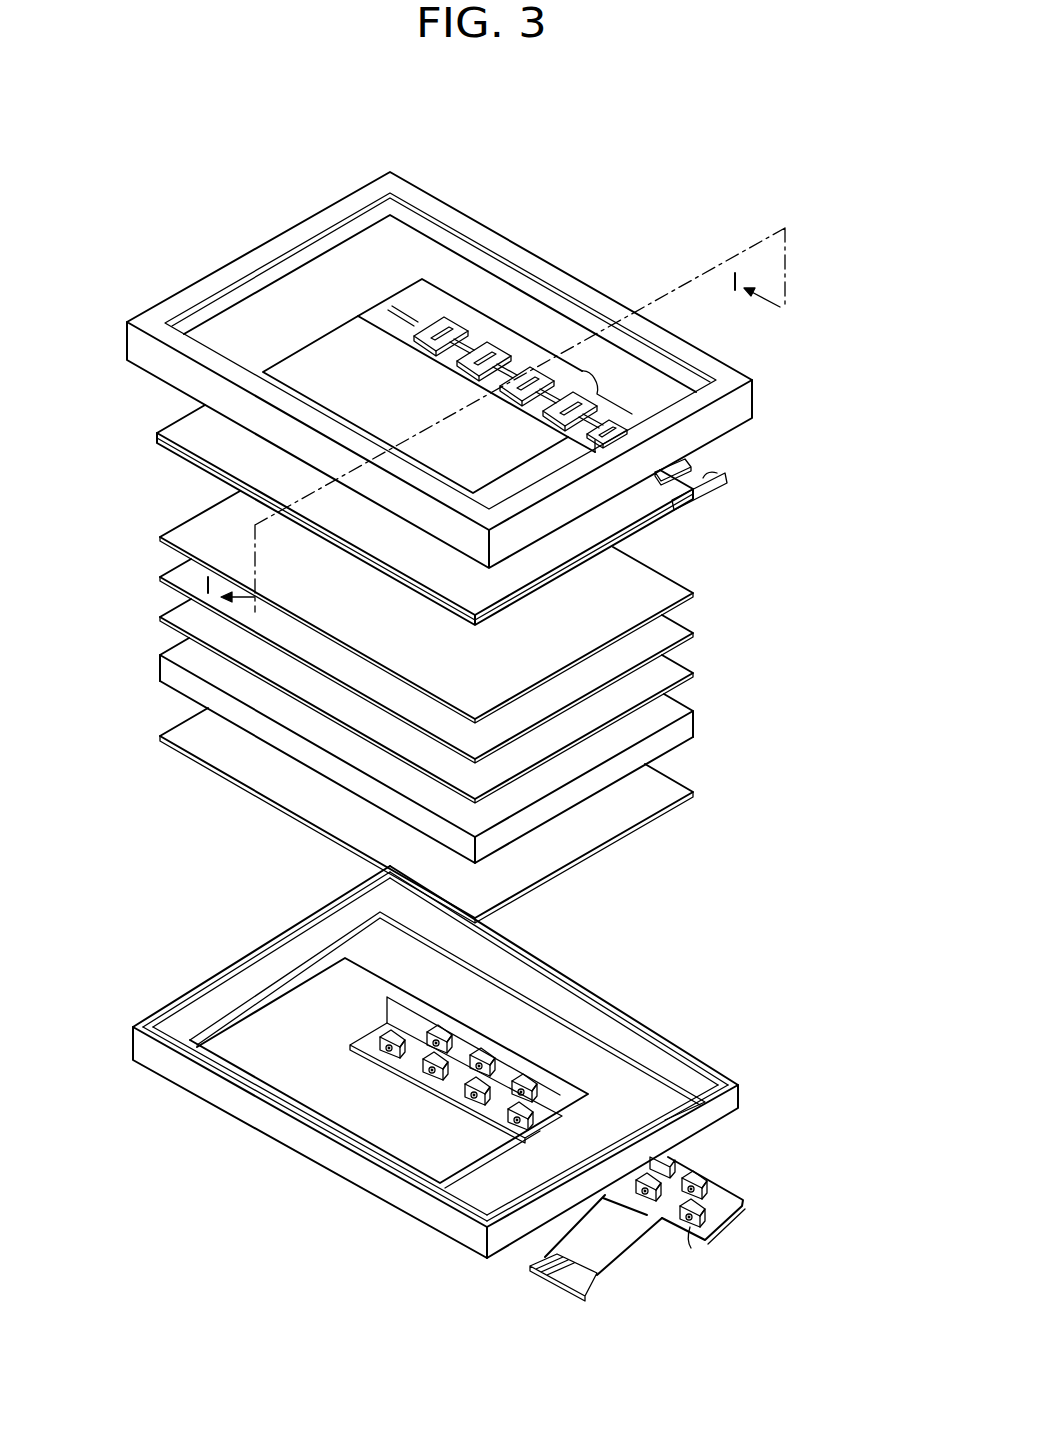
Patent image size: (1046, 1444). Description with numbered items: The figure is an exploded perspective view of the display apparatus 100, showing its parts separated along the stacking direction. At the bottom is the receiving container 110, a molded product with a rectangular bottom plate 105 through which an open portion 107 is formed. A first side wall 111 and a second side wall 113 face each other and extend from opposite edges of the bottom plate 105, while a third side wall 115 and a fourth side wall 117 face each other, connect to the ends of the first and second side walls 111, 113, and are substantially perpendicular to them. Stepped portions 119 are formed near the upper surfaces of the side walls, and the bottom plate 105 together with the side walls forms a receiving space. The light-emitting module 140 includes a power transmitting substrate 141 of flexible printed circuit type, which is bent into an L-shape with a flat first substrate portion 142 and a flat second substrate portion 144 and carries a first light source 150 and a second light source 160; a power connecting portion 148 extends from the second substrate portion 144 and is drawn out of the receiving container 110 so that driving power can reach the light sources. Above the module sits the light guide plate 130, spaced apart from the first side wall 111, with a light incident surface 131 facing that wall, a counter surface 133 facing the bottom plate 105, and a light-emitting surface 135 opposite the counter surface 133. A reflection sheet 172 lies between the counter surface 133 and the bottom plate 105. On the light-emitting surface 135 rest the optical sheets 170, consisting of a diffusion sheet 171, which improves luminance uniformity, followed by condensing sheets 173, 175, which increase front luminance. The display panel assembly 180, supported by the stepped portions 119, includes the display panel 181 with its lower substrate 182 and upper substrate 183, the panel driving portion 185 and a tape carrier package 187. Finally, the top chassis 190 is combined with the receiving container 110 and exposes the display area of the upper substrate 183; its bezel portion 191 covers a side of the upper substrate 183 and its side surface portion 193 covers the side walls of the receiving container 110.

The display apparatus 100 is at (500, 126).
The top chassis 190 is at (78, 271).
The bezel portion 191 is at (199, 284).
The side surface portion 193 is at (191, 370).
The display panel assembly 180 is at (838, 458).
The display panel 181 is at (800, 504).
The lower substrate 182 is at (647, 500).
The upper substrate 183 is at (649, 508).
The panel driving portion 185 is at (713, 473).
The tape carrier package 187 is at (700, 457).
The optical sheet(s) 170 is at (770, 577).
The condensing sheet 175 is at (664, 591).
The condensing sheet 173 is at (664, 631).
The diffusion sheet 171 is at (664, 671).
The light guide plate 130 is at (770, 688).
The light-emitting surface 135 is at (664, 705).
The light incident surface 131 is at (677, 723).
The counter surface 133 is at (681, 748).
The reflection sheet 172 is at (669, 787).
The receiving container 110 is at (702, 1056).
The first side wall 111 is at (568, 985).
The second side wall 113 is at (328, 1151).
The third side wall 115 is at (232, 975).
The fourth side wall 117 is at (727, 1112).
The stepped portions 119 is at (508, 985).
The bottom plate 105 is at (483, 1192).
The open portion 107 is at (289, 1069).
The light-emitting module 140 is at (846, 1340).
The first light source 150 is at (740, 1195).
The power transmitting substrate 141 is at (804, 1243).
The first substrate portion 142 is at (740, 1215).
The second substrate portion 144 is at (692, 1222).
The second light source 160 is at (689, 1240).
The power connecting portion 148 is at (610, 1276).